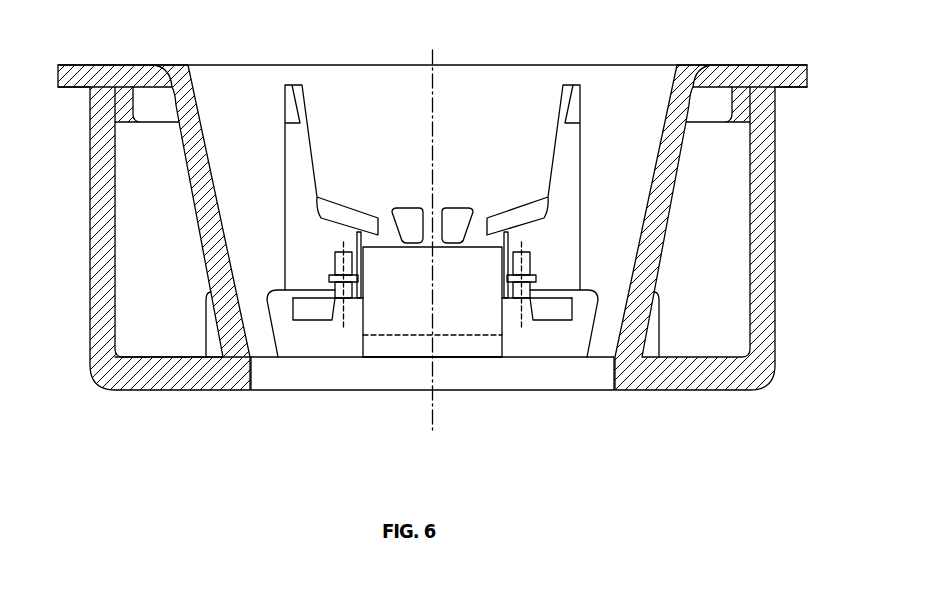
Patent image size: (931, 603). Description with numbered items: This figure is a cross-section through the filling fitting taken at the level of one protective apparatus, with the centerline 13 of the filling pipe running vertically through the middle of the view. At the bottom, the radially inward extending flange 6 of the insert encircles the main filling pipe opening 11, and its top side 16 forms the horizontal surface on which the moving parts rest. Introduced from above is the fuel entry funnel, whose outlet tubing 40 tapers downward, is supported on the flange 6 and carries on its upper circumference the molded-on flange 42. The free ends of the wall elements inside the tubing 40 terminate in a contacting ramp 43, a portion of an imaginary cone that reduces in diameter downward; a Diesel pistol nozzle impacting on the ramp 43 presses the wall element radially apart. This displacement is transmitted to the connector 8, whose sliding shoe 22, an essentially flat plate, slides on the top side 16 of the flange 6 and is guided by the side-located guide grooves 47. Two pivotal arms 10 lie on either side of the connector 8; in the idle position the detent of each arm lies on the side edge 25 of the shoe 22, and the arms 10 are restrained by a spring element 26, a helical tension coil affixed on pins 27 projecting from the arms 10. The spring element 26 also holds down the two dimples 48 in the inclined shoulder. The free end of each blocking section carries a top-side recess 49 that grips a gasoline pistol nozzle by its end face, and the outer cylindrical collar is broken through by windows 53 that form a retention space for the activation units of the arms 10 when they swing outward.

The flange 6 is at (213, 373).
The connector 8 is at (457, 345).
The pivotal arm 10 is at (480, 335).
The main filling pipe opening 11 is at (498, 380).
The centerline 13 is at (433, 53).
The top side of the flange 16 is at (141, 357).
The sliding shoe 22 is at (423, 347).
The side edge 25 is at (557, 342).
The spring element 26 is at (360, 268).
The pin 27 is at (540, 266).
The outlet tubing 40 is at (634, 140).
The flange 42 is at (773, 65).
The contacting ramp 43 is at (468, 262).
The guide groove 47 is at (385, 337).
The dimple 48 is at (407, 218).
The recess 49 is at (317, 308).
The window 53 is at (653, 337).